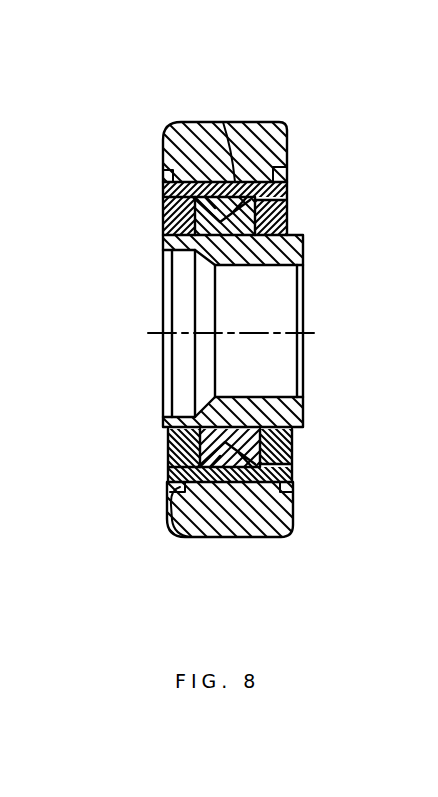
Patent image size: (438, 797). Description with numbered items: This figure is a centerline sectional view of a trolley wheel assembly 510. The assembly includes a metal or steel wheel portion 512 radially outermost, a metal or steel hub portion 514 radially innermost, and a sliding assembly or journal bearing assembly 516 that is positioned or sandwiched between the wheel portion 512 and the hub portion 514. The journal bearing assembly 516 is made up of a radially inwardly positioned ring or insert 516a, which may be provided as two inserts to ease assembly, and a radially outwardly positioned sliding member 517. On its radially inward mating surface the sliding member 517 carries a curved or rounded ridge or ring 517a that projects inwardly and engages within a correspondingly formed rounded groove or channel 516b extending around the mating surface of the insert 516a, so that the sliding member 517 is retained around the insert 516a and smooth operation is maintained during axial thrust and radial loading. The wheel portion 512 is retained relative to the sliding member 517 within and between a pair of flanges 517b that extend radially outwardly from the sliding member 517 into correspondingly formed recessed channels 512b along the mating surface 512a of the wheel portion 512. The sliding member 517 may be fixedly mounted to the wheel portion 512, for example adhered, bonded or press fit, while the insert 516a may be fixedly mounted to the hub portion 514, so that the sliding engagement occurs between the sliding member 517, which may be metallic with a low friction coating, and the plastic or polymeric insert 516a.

The trolley wheel assembly 510 is at (252, 62).
The wheel portion 512 is at (284, 117).
The mating surface 512a is at (232, 158).
The recessed portions or channels 512b is at (290, 148).
The hub portion 514 is at (307, 265).
The journal bearing assembly 516 is at (150, 196).
The insert 516a is at (173, 217).
The groove or channel 516b is at (168, 452).
The sliding member 517 is at (293, 182).
The ridge or ring 517a is at (284, 213).
The flanges 517b is at (163, 178).